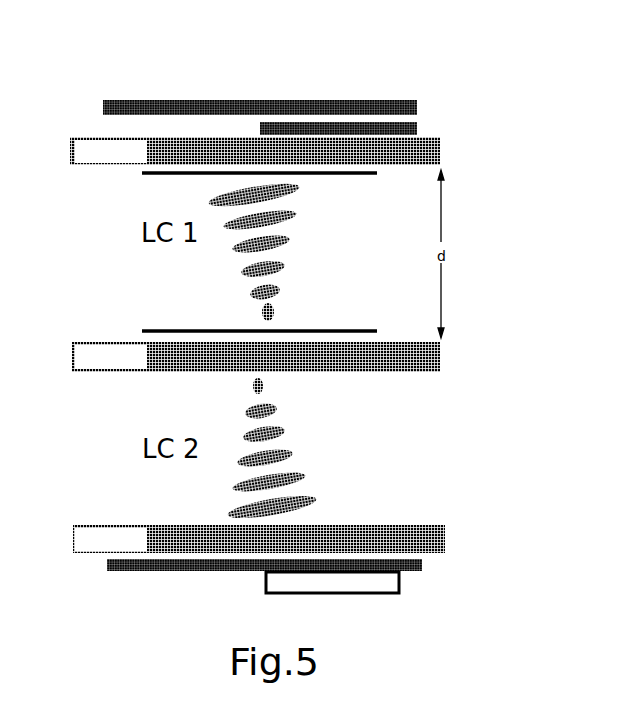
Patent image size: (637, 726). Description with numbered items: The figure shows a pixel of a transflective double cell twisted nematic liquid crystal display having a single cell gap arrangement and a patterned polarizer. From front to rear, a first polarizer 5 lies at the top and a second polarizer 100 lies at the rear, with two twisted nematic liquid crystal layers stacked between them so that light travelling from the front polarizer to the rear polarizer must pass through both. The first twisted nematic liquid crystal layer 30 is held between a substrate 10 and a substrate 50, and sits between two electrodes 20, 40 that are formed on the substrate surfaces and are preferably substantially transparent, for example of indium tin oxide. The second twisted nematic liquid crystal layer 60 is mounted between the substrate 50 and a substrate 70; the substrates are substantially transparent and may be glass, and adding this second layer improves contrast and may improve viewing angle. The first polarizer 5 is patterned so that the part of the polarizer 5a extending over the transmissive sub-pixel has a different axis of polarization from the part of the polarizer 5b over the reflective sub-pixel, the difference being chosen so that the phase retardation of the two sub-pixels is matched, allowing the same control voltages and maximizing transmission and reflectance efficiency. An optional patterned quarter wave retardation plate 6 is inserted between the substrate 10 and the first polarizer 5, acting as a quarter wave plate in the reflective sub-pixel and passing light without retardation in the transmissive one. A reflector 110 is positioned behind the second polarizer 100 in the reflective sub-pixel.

The first polarizer 5 is at (390, 95).
The part of the polarizer extending over the transmissive sub-pixel 5a is at (417, 108).
The part of the polarizer extending over the reflective sub-pixel 5b is at (187, 100).
The patterned quarter wave retardation plate 6 is at (422, 127).
The substrate 10 is at (443, 152).
The electrode 20 is at (377, 173).
The first twisted nematic liquid crystal layer 30 is at (300, 223).
The electrode 40 is at (377, 330).
The substrate 50 is at (443, 355).
The second twisted nematic liquid crystal layer 60 is at (303, 477).
The substrate 70 is at (440, 525).
The second polarizer 100 is at (422, 563).
The reflector 110 is at (390, 594).